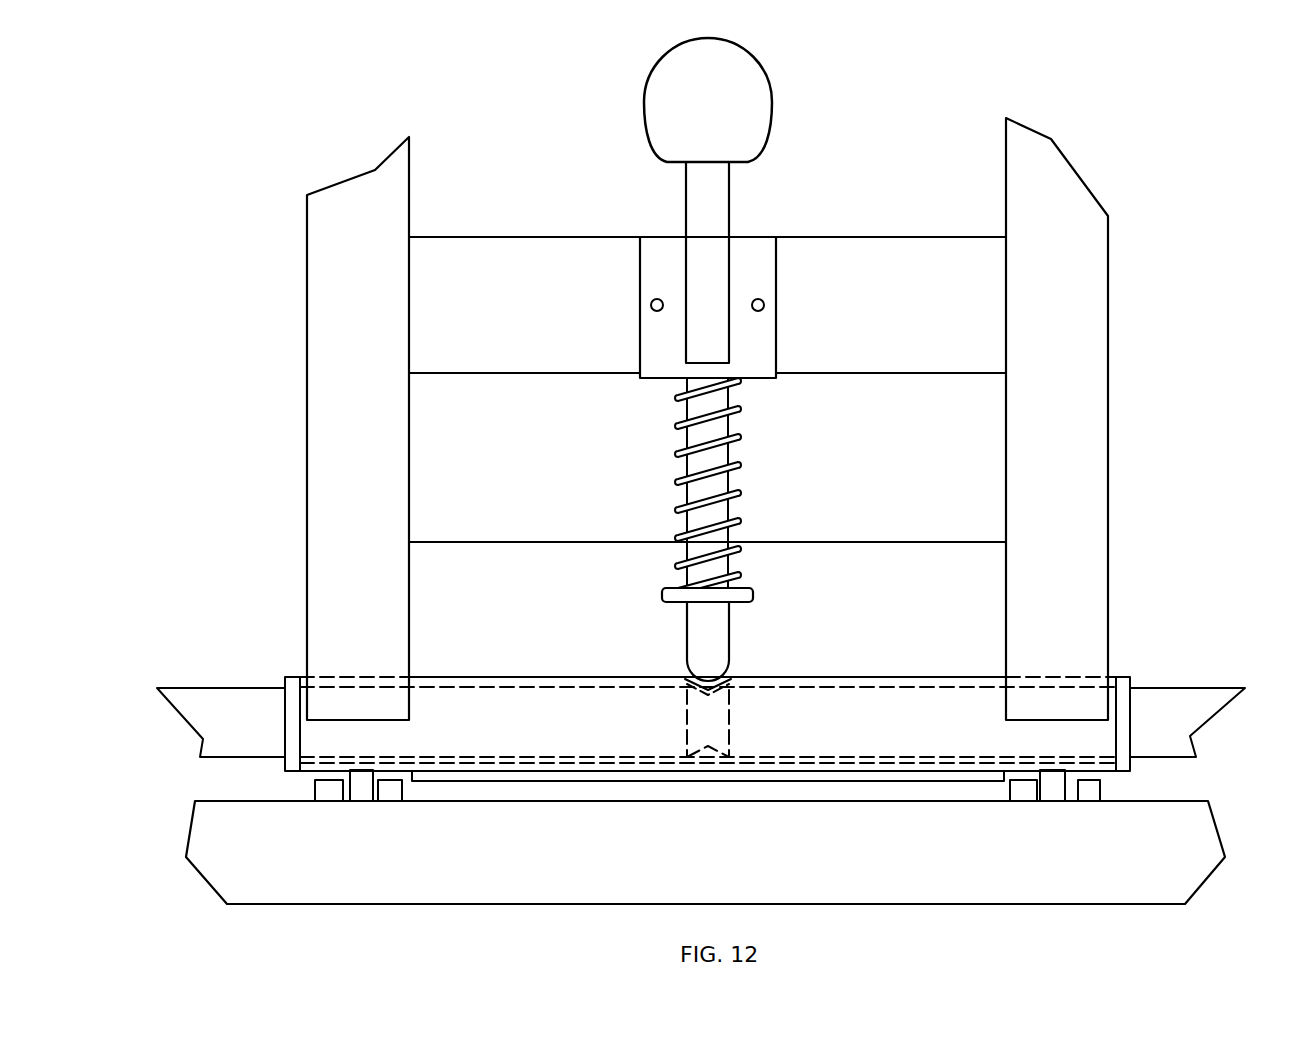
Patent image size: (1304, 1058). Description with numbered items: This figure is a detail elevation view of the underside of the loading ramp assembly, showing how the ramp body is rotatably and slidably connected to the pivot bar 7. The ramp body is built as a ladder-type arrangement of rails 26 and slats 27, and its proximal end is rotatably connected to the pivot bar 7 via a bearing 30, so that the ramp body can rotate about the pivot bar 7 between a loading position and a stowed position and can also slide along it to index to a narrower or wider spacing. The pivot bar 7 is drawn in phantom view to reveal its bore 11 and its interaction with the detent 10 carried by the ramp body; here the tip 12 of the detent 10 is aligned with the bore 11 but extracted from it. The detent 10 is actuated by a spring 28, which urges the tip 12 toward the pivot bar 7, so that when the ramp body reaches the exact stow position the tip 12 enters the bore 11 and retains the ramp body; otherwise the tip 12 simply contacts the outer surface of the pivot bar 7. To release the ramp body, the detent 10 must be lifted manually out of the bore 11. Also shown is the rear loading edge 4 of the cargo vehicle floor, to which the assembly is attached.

The rear loading edge 4 is at (895, 905).
The pivot bar 7 is at (250, 688).
The detent 10 is at (729, 195).
The bore 11 is at (732, 722).
The tip of detent 12 is at (690, 672).
The rails 26 is at (307, 493).
The slats 27 is at (895, 374).
The spring 28 is at (738, 459).
The bearing 30 is at (1132, 684).